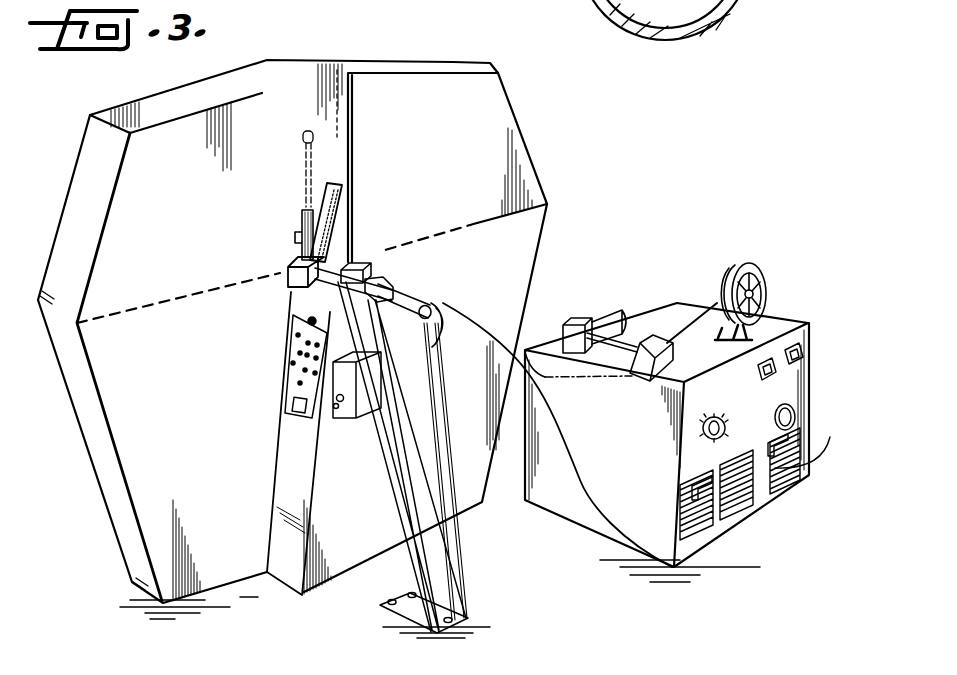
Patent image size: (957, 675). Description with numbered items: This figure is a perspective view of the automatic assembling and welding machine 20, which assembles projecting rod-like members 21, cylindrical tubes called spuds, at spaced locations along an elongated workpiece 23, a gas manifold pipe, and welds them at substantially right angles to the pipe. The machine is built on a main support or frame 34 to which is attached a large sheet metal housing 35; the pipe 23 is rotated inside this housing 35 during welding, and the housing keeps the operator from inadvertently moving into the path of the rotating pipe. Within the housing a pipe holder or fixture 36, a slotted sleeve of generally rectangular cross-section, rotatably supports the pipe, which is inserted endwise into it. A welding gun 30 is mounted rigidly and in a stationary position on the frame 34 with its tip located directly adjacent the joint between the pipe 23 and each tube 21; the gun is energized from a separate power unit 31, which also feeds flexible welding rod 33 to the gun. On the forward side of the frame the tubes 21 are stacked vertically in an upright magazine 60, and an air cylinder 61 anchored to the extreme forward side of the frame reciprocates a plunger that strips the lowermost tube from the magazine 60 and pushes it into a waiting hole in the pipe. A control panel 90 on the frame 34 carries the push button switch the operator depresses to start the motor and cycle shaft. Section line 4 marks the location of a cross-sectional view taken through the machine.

The section line 4- 4 is at (187, 246).
The machine 20 is at (405, 262).
The projecting rod-like members 21 is at (329, 184).
The elongated workpiece 23 is at (303, 133).
The welding gun 30 is at (341, 244).
The power unit 31 is at (669, 308).
The flexible welding rod 33 is at (588, 385).
The frame 34 is at (322, 289).
The sheet metal housing 35 is at (488, 115).
The pipe holder or fixture 36 is at (296, 221).
The magazine 60 is at (338, 219).
The air cylinder 61 is at (444, 295).
The control panel 90 is at (288, 391).